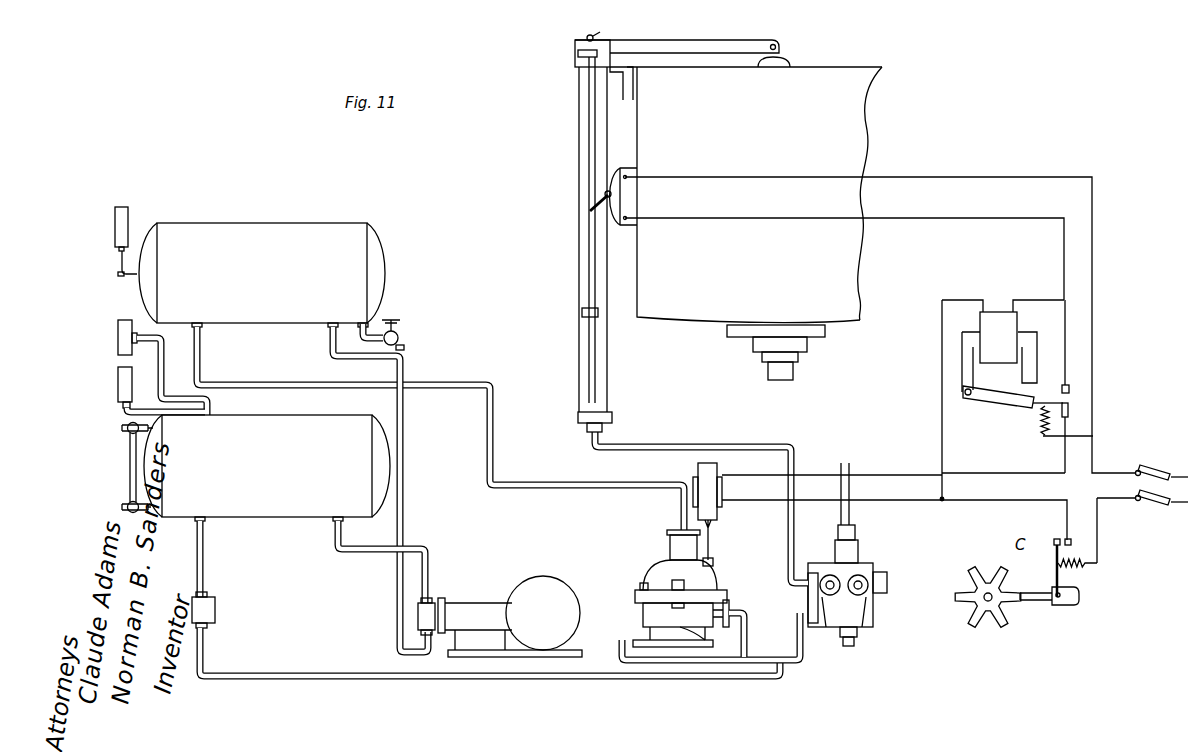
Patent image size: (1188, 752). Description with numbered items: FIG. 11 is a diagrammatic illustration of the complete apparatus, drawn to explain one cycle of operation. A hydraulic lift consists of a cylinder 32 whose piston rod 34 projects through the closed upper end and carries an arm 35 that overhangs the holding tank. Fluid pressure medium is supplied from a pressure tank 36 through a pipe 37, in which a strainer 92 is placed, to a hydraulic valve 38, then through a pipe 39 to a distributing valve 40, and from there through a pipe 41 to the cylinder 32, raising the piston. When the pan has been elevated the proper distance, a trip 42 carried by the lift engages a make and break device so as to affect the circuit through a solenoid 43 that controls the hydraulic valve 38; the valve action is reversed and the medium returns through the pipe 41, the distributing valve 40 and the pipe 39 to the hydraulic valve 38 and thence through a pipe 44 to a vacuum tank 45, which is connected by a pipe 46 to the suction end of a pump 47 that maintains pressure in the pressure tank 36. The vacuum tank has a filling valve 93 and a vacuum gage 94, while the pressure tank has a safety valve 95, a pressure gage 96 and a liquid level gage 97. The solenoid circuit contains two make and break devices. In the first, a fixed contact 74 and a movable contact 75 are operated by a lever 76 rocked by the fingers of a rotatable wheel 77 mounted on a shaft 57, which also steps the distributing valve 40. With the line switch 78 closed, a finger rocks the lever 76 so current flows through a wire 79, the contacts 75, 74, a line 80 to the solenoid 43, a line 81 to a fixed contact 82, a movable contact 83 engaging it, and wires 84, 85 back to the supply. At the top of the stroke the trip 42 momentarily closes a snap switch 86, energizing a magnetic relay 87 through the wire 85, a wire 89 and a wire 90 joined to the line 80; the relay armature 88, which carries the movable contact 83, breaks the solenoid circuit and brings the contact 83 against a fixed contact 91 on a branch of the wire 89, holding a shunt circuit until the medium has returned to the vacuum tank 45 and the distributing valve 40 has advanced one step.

The cylinder 32 is at (579, 363).
The piston rod 34 is at (592, 36).
The arm 35 is at (728, 59).
The pressure tank 36 is at (267, 468).
The pipe 37 is at (330, 675).
The hydraulic valve 38 is at (655, 585).
The pipe 39 is at (711, 647).
The distributing valve 40 is at (873, 624).
The pipe 41 is at (722, 447).
The trip 42 is at (577, 62).
The solenoid 43 is at (717, 478).
The pipe 44 is at (488, 466).
The vacuum tank 45 is at (251, 275).
The pipe 46 is at (400, 585).
The pump 47 is at (512, 593).
The shaft 57 is at (850, 470).
The fixed contact 74 is at (1070, 540).
The movable contact 75 is at (1055, 539).
The lever 76 is at (1085, 596).
The rotatable wheel 77 is at (970, 570).
The line switch 78 is at (1158, 500).
The wire 79 is at (1120, 500).
The line 80 is at (980, 500).
The line 81 is at (964, 475).
The fixed contact 82 is at (1070, 436).
The movable contact 83 is at (1068, 408).
The wire 84 is at (1052, 440).
The wire 85 is at (922, 172).
The snap switch 86 is at (592, 206).
The magnetic relay 87 is at (1017, 326).
The armature 88 is at (995, 400).
The wire 89 is at (942, 218).
The wire 90 is at (942, 390).
The fixed contact 91 is at (1060, 387).
The strainer 92 is at (212, 609).
The filling valve 93 is at (400, 336).
The vacuum gage 94 is at (130, 222).
The safety valve 95 is at (118, 343).
The pressure gage 96 is at (118, 372).
The liquid level gage 97 is at (130, 466).